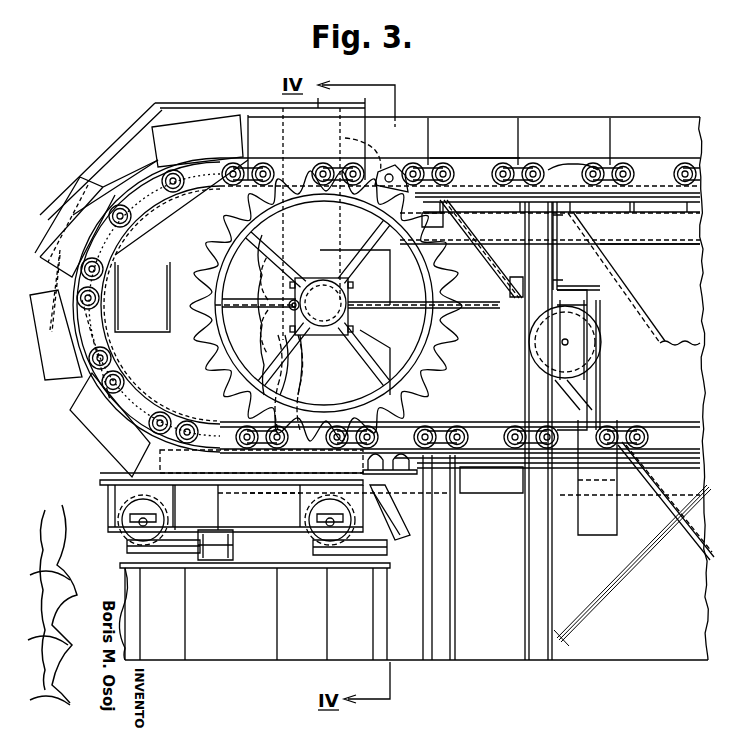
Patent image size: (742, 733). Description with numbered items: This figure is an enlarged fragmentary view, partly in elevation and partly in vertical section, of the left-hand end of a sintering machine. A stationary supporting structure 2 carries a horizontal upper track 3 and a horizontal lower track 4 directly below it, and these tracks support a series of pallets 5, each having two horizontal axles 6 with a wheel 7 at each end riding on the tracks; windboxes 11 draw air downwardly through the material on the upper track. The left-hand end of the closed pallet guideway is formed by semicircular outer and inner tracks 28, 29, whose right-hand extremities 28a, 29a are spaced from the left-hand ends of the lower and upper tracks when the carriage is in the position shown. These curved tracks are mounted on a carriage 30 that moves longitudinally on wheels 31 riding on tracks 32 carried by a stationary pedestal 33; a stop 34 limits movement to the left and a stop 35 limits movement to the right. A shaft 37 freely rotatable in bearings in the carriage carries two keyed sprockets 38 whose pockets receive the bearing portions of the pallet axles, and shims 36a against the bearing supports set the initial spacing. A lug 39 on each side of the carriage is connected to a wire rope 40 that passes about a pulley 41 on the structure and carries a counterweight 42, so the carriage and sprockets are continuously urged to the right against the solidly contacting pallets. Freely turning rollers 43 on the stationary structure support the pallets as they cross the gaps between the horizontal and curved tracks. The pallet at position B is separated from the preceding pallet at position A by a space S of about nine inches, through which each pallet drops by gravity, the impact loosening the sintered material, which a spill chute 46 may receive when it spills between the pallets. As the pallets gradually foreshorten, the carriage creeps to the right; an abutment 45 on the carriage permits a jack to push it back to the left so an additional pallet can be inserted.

The stationary supporting structure 2 is at (530, 575).
The horizontal upper track 3 is at (460, 169).
The horizontal lower track 4 is at (474, 463).
The pallets 5 is at (535, 124).
The horizontal axles 6 is at (591, 169).
The wheels 7 is at (678, 169).
The windboxes 11 is at (610, 268).
The semicircular curved outer track 28 is at (212, 140).
The right-hand extremity of outer track 28a is at (382, 505).
The semicircular curved inner track 29 is at (162, 209).
The right-hand extremity of inner track 29a is at (345, 140).
The carriage 30 is at (108, 481).
The wheels 31 is at (120, 530).
The tracks 32 is at (155, 554).
The stationary pedestal 33 is at (262, 623).
The stop 34 is at (205, 530).
The stop 35 is at (265, 538).
The shims 36a is at (292, 347).
The shaft 37 is at (358, 290).
The sprockets 38 is at (444, 364).
The lug 39 is at (277, 295).
The wire rope 40 is at (600, 380).
The pulley 41 is at (604, 335).
The counterweight 42 is at (591, 526).
The freely turning rollers 43 is at (383, 184).
The abutment 45 is at (212, 555).
The spill chute 46 is at (143, 320).
The pallet position A is at (91, 194).
The pallet position B is at (157, 139).
The space S is at (138, 192).